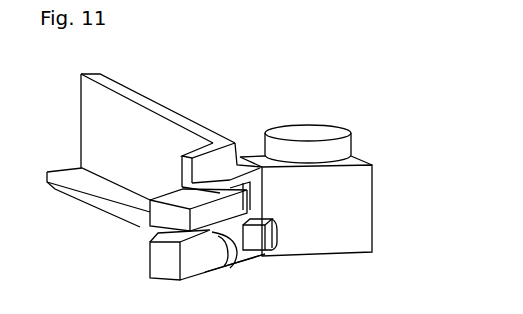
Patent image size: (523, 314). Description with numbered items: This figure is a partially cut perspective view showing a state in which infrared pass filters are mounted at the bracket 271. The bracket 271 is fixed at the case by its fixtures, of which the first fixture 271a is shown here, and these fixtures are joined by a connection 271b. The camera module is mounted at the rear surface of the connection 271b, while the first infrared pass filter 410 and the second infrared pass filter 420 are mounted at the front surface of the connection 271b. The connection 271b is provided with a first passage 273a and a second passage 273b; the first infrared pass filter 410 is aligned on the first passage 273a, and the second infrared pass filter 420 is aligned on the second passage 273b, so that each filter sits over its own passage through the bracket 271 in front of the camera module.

The bracket 271 is at (362, 138).
The first fixture 271a is at (206, 103).
The connection 271b is at (230, 172).
The first passage 273a is at (232, 218).
The second passage 273b is at (224, 252).
The first infrared pass filter 410 is at (158, 210).
The second infrared pass filter 420 is at (163, 264).